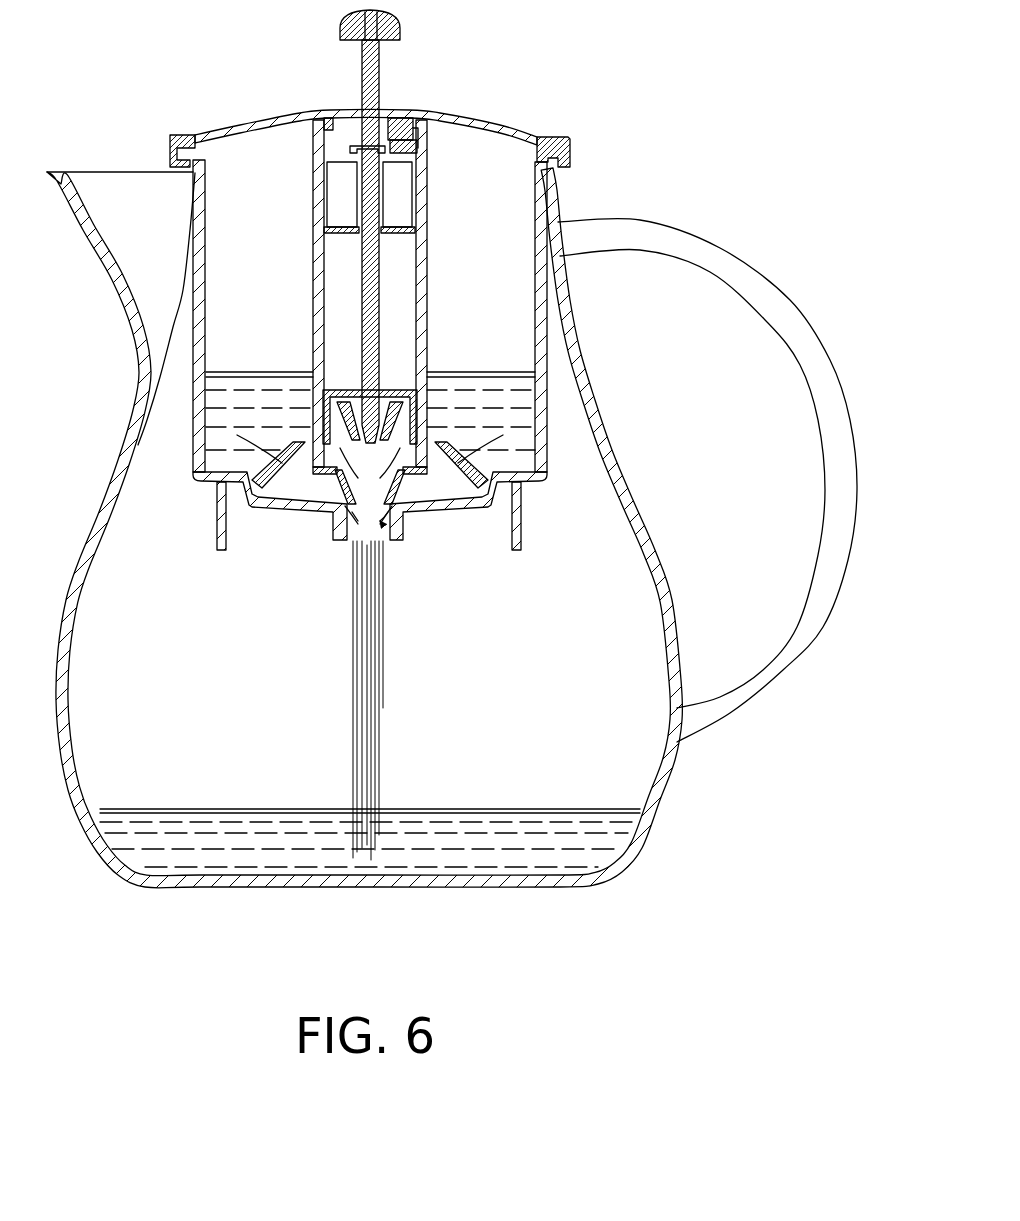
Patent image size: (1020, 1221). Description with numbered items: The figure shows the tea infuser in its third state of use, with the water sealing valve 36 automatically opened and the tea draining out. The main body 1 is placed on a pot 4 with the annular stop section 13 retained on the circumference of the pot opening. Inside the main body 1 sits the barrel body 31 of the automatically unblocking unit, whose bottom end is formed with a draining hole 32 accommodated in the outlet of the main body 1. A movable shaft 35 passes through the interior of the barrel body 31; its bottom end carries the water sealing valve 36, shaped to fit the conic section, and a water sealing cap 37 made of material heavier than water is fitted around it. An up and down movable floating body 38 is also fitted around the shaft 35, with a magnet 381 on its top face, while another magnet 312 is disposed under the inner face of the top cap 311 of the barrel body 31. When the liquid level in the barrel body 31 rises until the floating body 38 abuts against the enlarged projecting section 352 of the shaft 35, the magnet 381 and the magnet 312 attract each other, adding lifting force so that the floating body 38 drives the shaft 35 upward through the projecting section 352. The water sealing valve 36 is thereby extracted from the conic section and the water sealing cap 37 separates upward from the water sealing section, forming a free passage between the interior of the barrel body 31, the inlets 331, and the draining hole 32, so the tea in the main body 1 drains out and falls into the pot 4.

The main body 1 is at (548, 440).
The pot 4 is at (578, 358).
The annular stop section 13 is at (562, 172).
The barrel body 31 is at (423, 350).
The draining hole 32 is at (360, 546).
The inlets 331 is at (402, 488).
The movable shaft 35 is at (376, 62).
The enlarged projecting section 352 is at (352, 150).
The top cap 311 is at (387, 118).
The magnet 312 is at (448, 110).
The water sealing valve 36 is at (320, 416).
The water sealing cap 37 is at (382, 425).
The floating body 38 is at (343, 156).
The magnet 381 is at (428, 150).